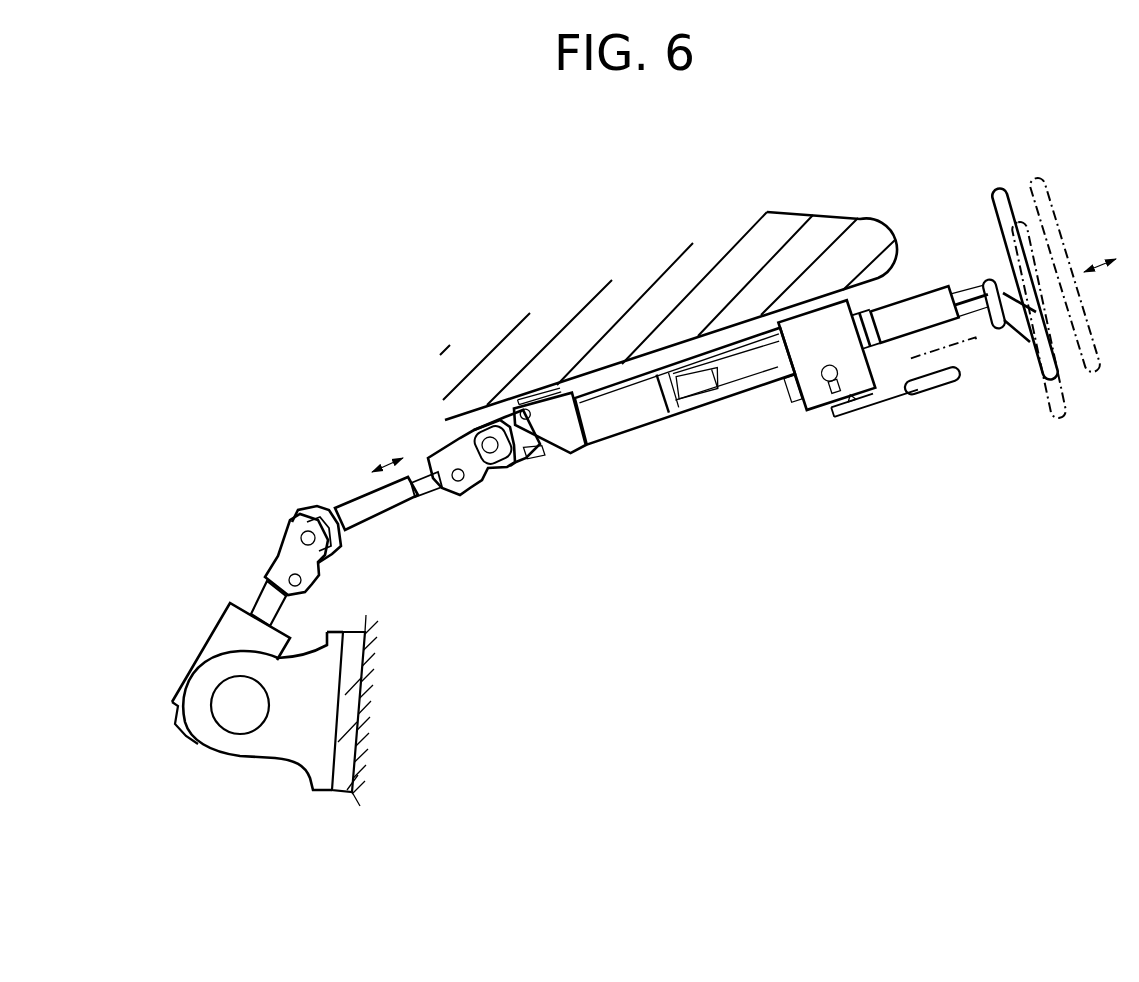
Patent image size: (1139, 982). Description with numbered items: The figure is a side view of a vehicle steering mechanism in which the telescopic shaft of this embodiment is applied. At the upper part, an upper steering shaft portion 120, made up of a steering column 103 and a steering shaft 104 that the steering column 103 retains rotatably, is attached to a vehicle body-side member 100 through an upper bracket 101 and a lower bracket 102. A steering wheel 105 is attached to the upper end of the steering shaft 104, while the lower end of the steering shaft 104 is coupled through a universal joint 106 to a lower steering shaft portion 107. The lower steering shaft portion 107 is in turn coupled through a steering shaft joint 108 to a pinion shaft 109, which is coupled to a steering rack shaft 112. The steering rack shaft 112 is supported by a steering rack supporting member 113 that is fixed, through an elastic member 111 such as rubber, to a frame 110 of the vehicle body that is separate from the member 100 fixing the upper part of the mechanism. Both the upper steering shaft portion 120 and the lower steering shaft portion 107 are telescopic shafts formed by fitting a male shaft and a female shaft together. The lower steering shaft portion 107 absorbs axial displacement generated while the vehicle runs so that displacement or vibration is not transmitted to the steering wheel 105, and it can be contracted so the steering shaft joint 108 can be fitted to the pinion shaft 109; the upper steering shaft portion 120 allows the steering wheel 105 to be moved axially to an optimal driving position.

The vehicle body-side member 100 is at (665, 277).
The upper bracket 101 is at (809, 375).
The lower bracket 102 is at (570, 438).
The steering column 103 is at (926, 300).
The steering shaft 104 is at (970, 294).
The steering wheel 105 is at (998, 188).
The universal joint 106 is at (445, 455).
The lower steering shaft portion 107 is at (358, 488).
The steering shaft joint 108 is at (277, 563).
The pinion shaft 109 is at (268, 606).
The frame 110 is at (370, 733).
The elastic member 111 is at (354, 662).
The steering rack shaft 112 is at (223, 702).
The steering rack supporting member 113 is at (283, 740).
The upper steering shaft portion 120 is at (705, 418).